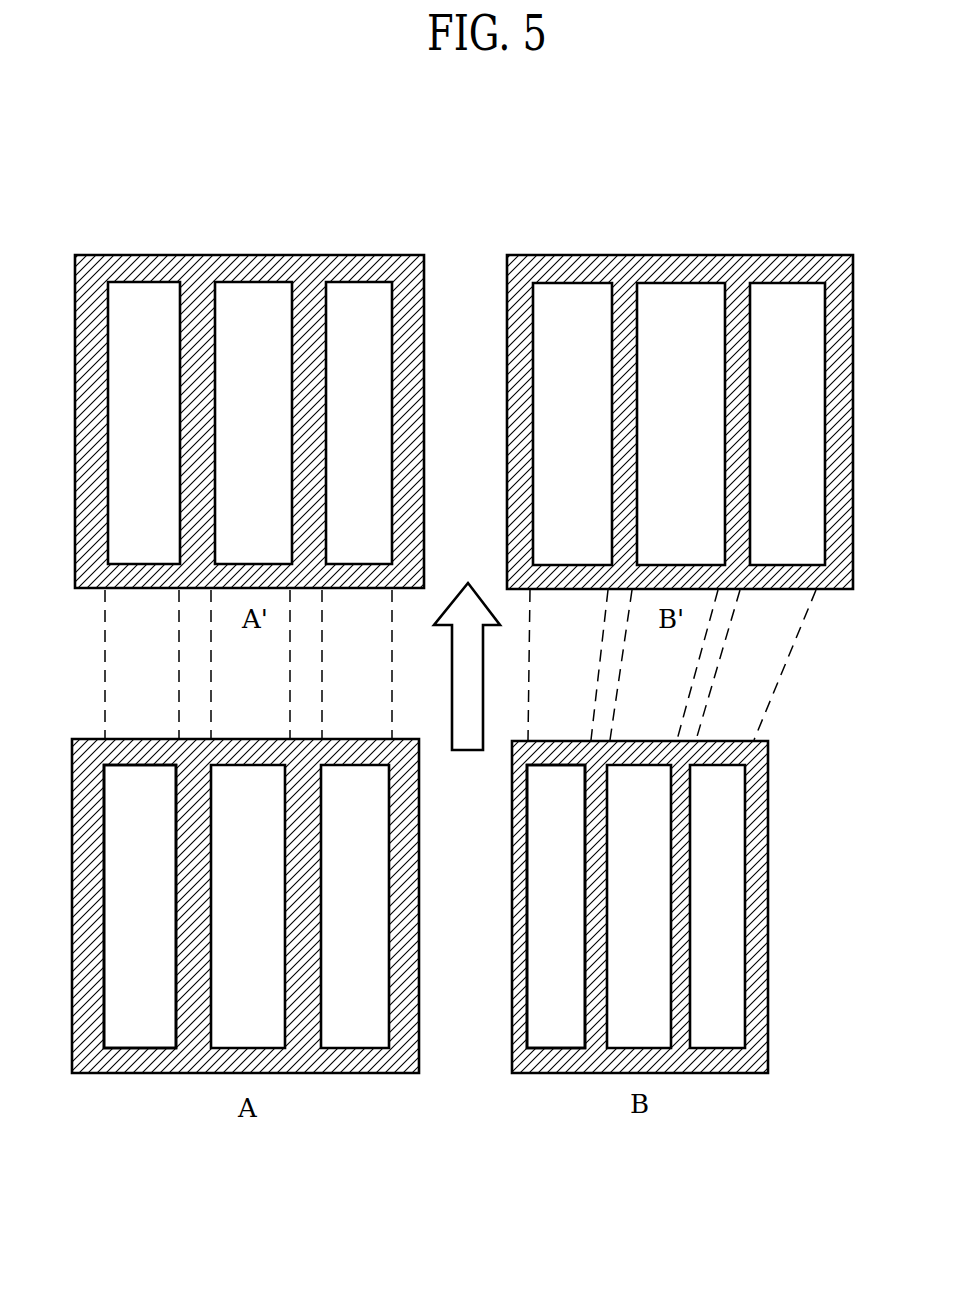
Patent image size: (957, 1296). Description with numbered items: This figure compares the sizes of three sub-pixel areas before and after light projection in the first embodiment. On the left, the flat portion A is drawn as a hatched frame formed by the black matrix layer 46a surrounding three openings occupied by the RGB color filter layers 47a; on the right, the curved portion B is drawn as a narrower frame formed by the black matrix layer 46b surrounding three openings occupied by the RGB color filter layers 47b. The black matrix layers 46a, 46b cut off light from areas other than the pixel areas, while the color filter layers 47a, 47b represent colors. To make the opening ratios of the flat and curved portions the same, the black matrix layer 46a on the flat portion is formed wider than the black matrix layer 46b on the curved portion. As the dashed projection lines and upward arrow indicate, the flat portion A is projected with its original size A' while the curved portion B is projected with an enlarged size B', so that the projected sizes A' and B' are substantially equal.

The black matrix layer 46a is at (90, 1058).
The RGB color filter layer 47a is at (143, 1038).
The black matrix layer 46b is at (530, 1075).
The RGB color filter layer 47b is at (558, 1038).